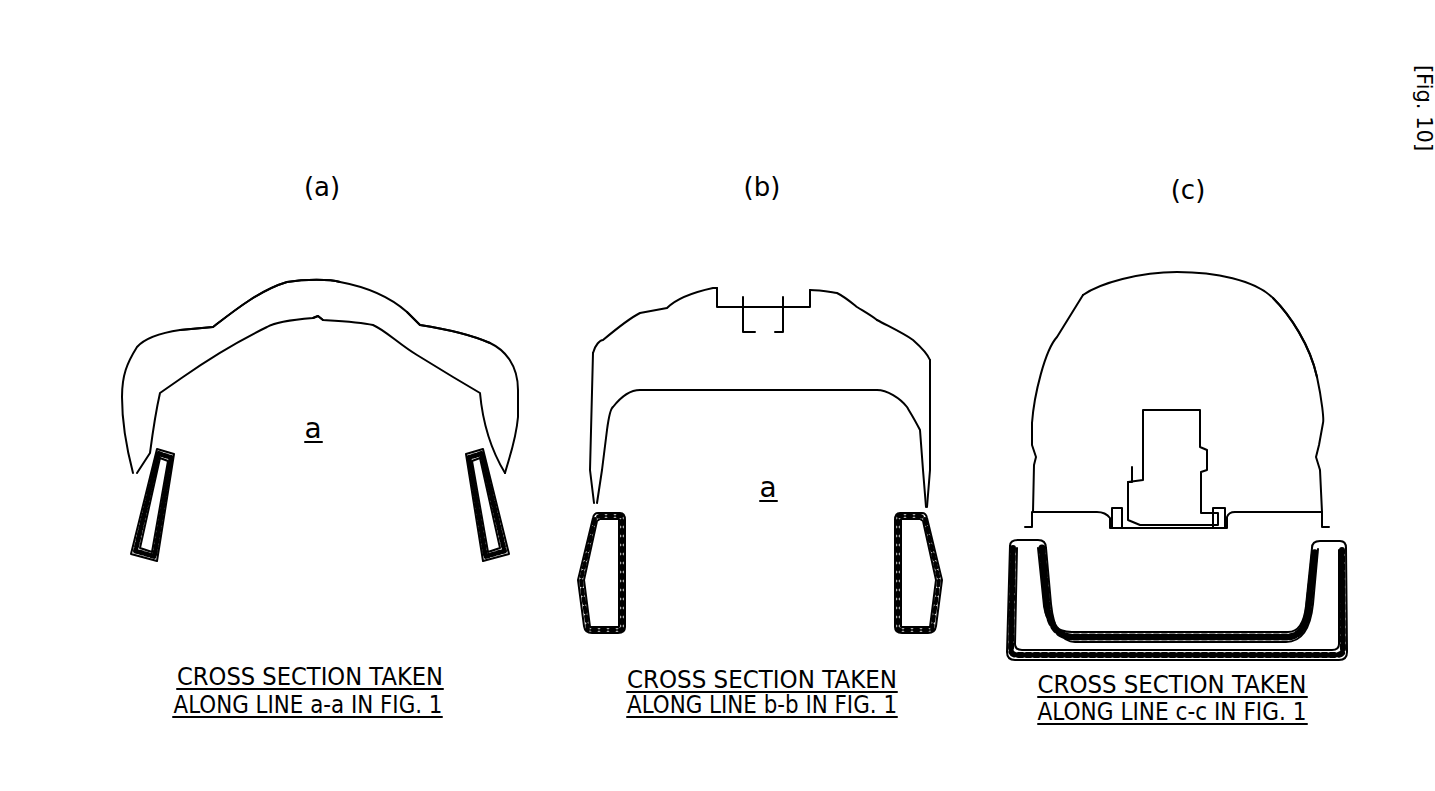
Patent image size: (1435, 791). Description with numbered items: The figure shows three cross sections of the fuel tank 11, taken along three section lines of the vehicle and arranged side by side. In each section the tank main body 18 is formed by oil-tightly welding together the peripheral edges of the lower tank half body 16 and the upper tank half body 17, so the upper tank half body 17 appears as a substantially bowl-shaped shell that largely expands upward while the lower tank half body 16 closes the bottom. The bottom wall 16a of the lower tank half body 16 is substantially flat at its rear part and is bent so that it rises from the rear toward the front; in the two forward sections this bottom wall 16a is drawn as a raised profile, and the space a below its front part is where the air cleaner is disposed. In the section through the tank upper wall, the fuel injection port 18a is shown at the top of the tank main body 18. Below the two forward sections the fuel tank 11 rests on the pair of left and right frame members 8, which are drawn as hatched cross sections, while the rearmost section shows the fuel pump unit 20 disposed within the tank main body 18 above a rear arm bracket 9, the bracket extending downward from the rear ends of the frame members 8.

The frame member 8 is at (155, 537).
The rear arm bracket 9 is at (1007, 620).
The fuel tank 11 is at (452, 300).
The lower tank half body 16 is at (217, 357).
The bottom wall 16a is at (347, 325).
The upper tank half body 17 is at (213, 327).
The tank main body 18 is at (491, 336).
The fuel injection port 18a is at (780, 305).
The fuel pump unit 20 is at (1198, 417).